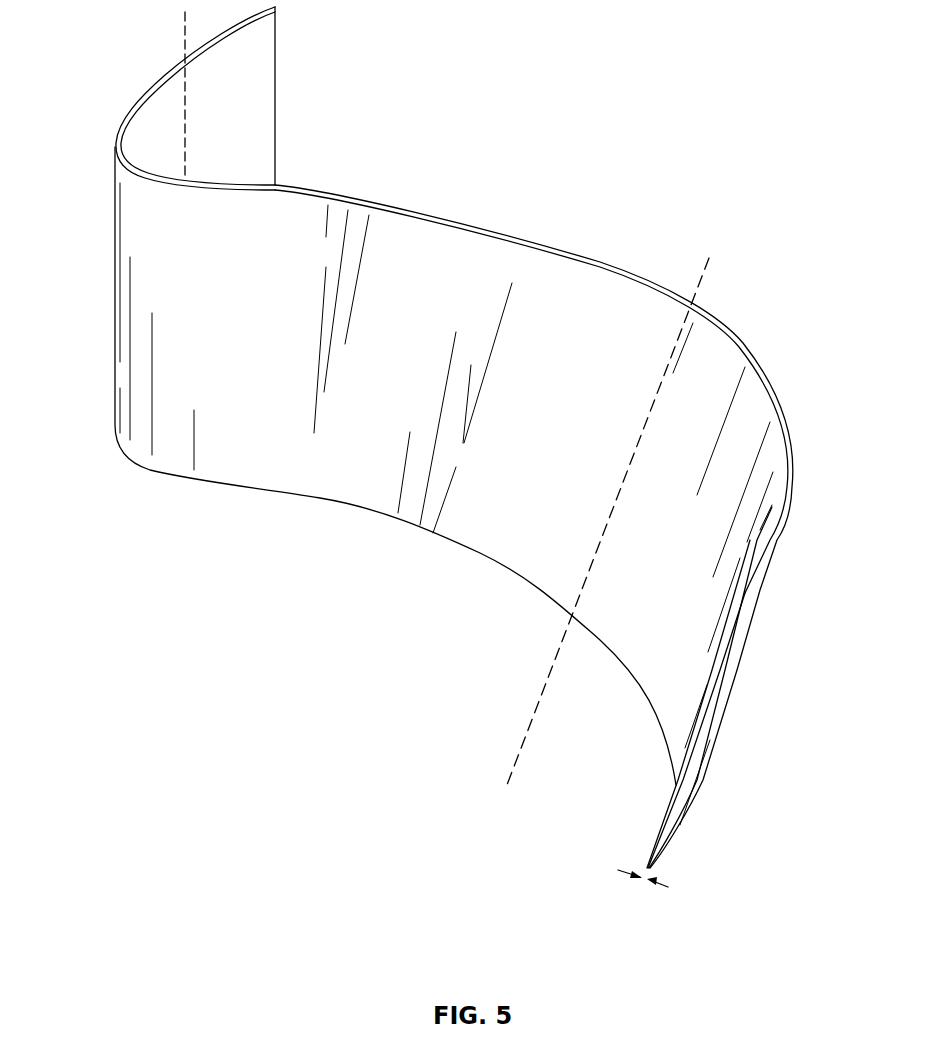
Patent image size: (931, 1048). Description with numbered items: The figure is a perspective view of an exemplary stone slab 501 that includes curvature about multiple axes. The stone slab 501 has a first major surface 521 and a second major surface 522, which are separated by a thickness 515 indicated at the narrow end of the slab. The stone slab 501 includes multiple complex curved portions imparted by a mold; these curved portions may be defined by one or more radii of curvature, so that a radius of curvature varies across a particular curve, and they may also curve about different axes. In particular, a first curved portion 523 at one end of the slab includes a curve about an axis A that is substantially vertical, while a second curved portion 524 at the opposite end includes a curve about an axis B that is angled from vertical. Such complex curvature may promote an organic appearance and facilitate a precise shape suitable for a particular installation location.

The stone slab 501 is at (446, 469).
The thickness 515 is at (623, 872).
The first major surface 521 is at (247, 118).
The second major surface 522 is at (462, 535).
The first curved portion 523 is at (124, 98).
The second curved portion 524 is at (762, 603).